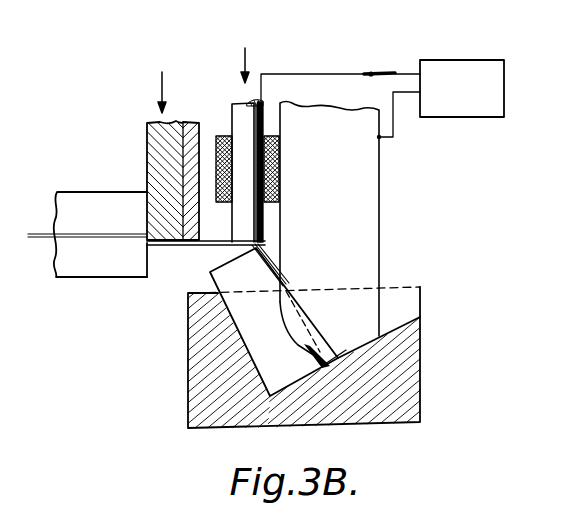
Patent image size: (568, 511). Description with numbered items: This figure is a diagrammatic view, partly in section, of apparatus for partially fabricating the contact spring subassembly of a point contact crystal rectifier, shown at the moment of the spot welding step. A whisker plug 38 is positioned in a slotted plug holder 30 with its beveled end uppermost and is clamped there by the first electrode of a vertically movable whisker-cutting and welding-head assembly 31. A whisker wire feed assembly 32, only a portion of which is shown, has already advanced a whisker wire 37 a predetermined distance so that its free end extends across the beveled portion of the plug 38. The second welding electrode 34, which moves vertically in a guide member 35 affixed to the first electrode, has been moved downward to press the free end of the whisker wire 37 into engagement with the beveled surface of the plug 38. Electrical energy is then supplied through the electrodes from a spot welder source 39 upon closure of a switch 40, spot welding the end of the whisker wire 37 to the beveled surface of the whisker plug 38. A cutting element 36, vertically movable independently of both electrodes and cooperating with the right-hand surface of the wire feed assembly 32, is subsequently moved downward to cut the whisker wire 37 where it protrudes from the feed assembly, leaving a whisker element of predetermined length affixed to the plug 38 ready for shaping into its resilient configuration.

The slotted plug holder 30 is at (410, 356).
The whisker-cutting and welding-head assembly 31 is at (395, 235).
The whisker wire feed assembly 32 is at (86, 284).
The second welding electrode 34 is at (238, 113).
The guide member 35 is at (367, 190).
The cutting element 36 is at (147, 147).
The whisker wire 37 is at (203, 246).
The whisker plug 38 is at (220, 278).
The spot welder source 39 is at (453, 59).
The switch 40 is at (375, 65).